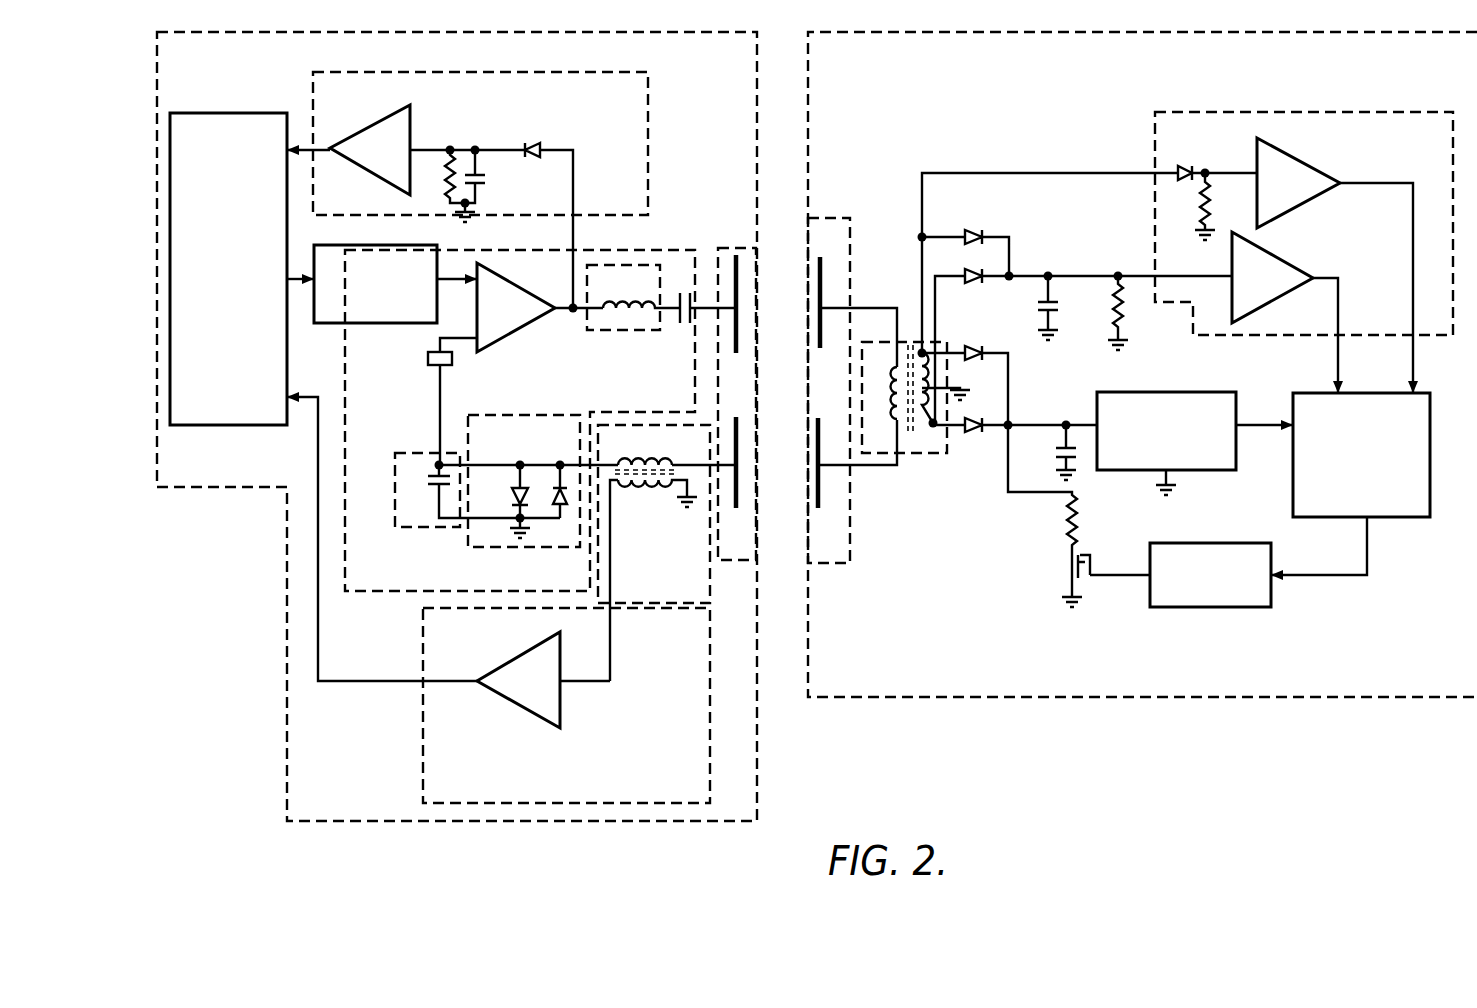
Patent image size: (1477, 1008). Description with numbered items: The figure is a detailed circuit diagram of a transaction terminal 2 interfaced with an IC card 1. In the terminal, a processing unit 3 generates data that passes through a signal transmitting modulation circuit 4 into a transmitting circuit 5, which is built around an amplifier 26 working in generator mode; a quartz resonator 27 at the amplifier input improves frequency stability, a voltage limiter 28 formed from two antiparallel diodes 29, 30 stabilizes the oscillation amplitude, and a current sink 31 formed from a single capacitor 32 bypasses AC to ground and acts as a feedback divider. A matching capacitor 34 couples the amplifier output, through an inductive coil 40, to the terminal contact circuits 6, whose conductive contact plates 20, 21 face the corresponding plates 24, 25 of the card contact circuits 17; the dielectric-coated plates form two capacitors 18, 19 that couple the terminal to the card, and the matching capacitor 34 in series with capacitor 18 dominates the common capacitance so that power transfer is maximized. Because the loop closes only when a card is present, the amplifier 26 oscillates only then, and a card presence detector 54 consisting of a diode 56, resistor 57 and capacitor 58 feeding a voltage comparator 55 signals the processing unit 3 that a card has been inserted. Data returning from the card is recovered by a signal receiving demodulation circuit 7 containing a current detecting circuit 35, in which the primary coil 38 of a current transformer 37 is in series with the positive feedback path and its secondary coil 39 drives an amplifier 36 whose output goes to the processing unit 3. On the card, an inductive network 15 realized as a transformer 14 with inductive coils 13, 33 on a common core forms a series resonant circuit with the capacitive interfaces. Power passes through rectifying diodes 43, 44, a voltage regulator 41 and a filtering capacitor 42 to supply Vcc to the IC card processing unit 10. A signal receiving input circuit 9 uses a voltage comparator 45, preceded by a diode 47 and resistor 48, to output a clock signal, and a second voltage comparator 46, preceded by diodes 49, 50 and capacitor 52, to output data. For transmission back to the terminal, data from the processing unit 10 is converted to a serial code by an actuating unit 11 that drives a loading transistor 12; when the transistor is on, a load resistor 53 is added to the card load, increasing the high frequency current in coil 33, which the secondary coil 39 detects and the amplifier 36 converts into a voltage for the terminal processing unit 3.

The IC card 1 is at (1228, 31).
The transaction terminal 2 is at (287, 508).
The processing unit 3 is at (220, 112).
The signal transmitting modulation circuit 4 is at (318, 246).
The transmitting circuit 5 is at (650, 251).
The terminal contact circuits 6 is at (755, 248).
The signal receiving demodulation circuit 7 is at (416, 703).
The signal receiving input circuit 9 is at (1178, 112).
The IC card processing unit 10 is at (1432, 452).
The actuating unit 11 is at (1253, 608).
The loading transistor 12 is at (1065, 553).
The first inductive coil 13 is at (912, 418).
The transformer 14 is at (912, 345).
The inductive network 15 is at (888, 341).
The IC card contact circuits 17 is at (809, 221).
The capacitor 18 is at (808, 240).
The capacitor 19 is at (806, 360).
The conductive contact plate 20 is at (728, 252).
The conductive contact plate 21 is at (738, 510).
The conductive contact plate 24 is at (824, 258).
The conductive contact plate 25 is at (822, 510).
The amplifier 26 is at (517, 286).
The quartz resonator 27 is at (426, 358).
The voltage limiter 28 is at (505, 548).
The diode 29 is at (510, 485).
The diode 30 is at (556, 492).
The current sink 31 is at (405, 449).
The capacitor 32 is at (428, 478).
The second inductive coil 33 is at (896, 386).
The matching capacitor 34 is at (686, 292).
The current detecting circuit 35 is at (422, 745).
The amplifier 36 is at (514, 660).
The current transformer 37 is at (637, 527).
The primary coil 38 is at (647, 462).
The secondary coil 39 is at (650, 490).
The inductive coil 40 is at (626, 296).
The voltage regulator 41 is at (1215, 393).
The filtering capacitor 42 is at (1055, 452).
The rectifying diode 43 is at (974, 354).
The rectifying diode 44 is at (972, 420).
The voltage comparator 45 is at (1317, 197).
The second voltage comparator 46 is at (1277, 303).
The diode 47 is at (1187, 168).
The resistor 48 is at (1196, 200).
The diode 49 is at (974, 233).
The diode 50 is at (975, 284).
The capacitor 52 is at (1037, 305).
The load resistor 53 is at (1060, 518).
The card presence detector 54 is at (645, 72).
The voltage comparator 55 is at (372, 128).
The diode 56 is at (539, 147).
The resistor 57 is at (446, 180).
The capacitor 58 is at (497, 180).